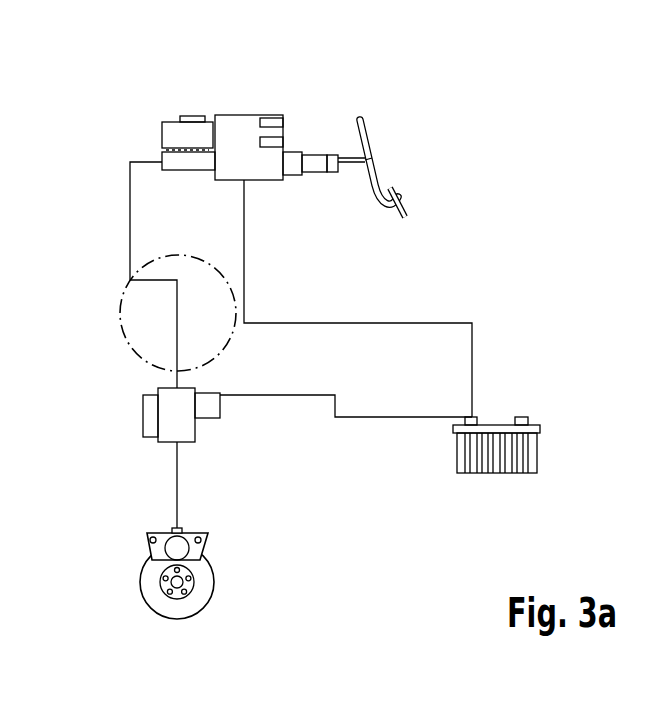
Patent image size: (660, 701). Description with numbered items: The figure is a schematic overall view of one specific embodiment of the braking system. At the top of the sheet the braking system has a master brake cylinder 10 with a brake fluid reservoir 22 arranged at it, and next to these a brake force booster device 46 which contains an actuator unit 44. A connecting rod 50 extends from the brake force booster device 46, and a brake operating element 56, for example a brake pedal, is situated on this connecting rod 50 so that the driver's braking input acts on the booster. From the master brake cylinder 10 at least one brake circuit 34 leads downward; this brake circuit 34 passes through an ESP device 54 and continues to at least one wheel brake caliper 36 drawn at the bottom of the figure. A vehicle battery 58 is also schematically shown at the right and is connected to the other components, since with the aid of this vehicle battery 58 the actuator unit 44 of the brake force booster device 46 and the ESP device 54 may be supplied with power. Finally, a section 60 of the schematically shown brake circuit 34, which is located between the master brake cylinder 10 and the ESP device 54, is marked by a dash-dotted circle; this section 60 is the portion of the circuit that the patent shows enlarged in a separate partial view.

The master brake cylinder 10 is at (188, 170).
The brake fluid reservoir 22 is at (162, 137).
The brake circuit 34 is at (110, 267).
The wheel brake caliper 36 is at (206, 546).
The actuator unit 44 is at (283, 123).
The brake force booster device 46 is at (254, 103).
The connecting rod 50 is at (355, 166).
The ESP device 54 is at (196, 438).
The brake operating element 56 is at (379, 175).
The vehicle battery 58 is at (538, 452).
The section of the brake circuit 60 is at (128, 353).